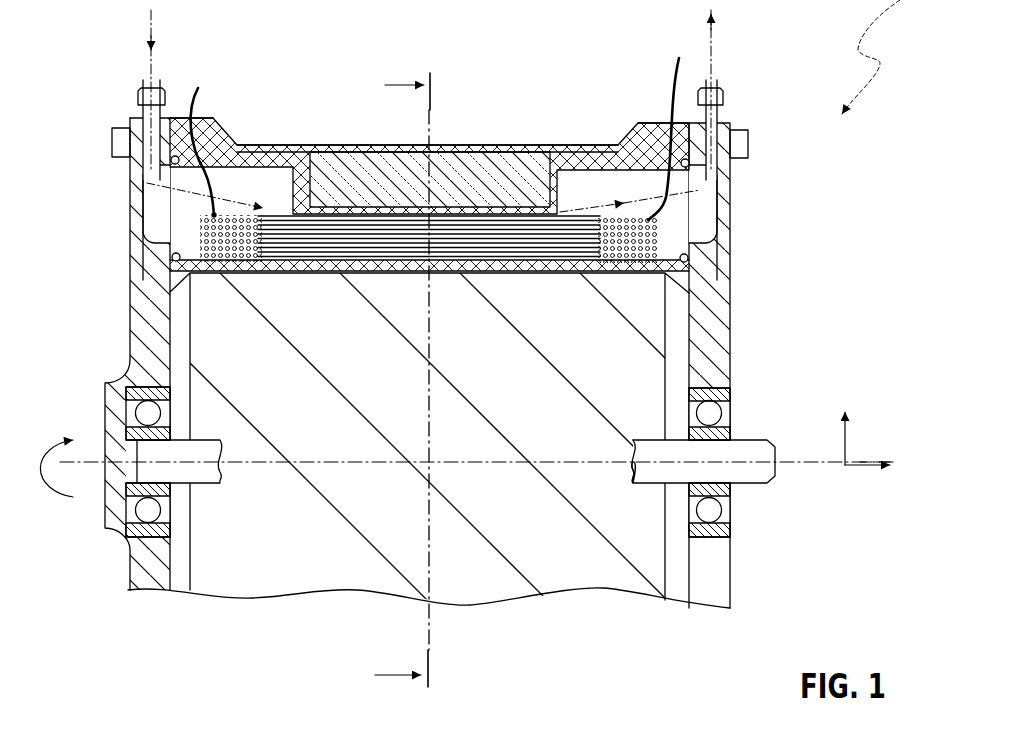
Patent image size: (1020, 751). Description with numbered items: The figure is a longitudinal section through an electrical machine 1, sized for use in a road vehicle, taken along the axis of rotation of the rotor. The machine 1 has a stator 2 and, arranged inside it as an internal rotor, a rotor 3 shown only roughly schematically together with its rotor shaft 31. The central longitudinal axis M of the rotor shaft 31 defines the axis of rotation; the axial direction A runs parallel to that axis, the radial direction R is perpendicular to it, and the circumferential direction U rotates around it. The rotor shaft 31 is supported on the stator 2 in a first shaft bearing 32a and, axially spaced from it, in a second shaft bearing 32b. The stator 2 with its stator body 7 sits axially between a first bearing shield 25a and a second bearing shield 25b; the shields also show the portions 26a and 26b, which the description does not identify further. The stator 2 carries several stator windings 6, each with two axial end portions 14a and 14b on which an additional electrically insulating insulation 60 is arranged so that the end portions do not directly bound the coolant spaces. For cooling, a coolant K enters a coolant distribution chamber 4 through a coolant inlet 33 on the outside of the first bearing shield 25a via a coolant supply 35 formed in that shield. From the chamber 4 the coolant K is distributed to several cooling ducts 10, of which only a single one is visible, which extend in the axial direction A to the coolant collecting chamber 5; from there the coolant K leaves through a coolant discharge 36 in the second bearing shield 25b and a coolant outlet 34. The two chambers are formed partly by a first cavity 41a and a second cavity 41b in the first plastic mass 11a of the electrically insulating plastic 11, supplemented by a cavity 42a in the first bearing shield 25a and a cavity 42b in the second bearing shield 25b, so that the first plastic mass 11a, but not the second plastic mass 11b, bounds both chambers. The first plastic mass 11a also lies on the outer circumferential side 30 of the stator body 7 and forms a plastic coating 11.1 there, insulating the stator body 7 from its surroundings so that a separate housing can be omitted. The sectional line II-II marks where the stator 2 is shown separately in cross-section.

The electrical machine 1 is at (871, 57).
The stator 2 is at (548, 143).
The rotor 3 is at (422, 424).
The coolant distribution chamber 4 is at (197, 217).
The coolant collecting chamber 5 is at (680, 220).
The stator windings 6 is at (475, 274).
The stator body 7 is at (470, 143).
The cooling ducts 10 is at (373, 206).
The electrically insulating plastic 11 is at (603, 143).
The first plastic mass 11a is at (429, 265).
The second plastic mass 11b is at (588, 277).
The plastic coating 11.1 is at (506, 145).
The first axial end portion 14a is at (198, 245).
The second axial end portion 14b is at (658, 247).
The first bearing shield 25a is at (126, 290).
The second bearing shield 25b is at (732, 292).
The first bearing seat 26a is at (128, 353).
The second bearing seat 26b is at (732, 353).
The outer circumferential side 30 is at (342, 145).
The rotor shaft 31 is at (747, 476).
The first shaft bearing 32a is at (108, 396).
The second shaft bearing 32b is at (732, 400).
The coolant inlet 33 is at (136, 96).
The coolant outlet 34 is at (726, 96).
The coolant supply 35 is at (112, 140).
The coolant discharge 36 is at (750, 145).
The first cavity 41a is at (241, 188).
The second cavity 41b is at (649, 185).
The cavity in first bearing shield 42a is at (148, 200).
The cavity in second bearing shield 42b is at (708, 200).
The additional electrically insulating insulation 60 is at (442, 126).
The coolant K is at (140, 44).
The circumferential direction U is at (60, 498).
The radial direction R is at (846, 440).
The axial direction A is at (851, 470).
The central longitudinal axis M is at (800, 472).
The sectional line II is at (395, 382).